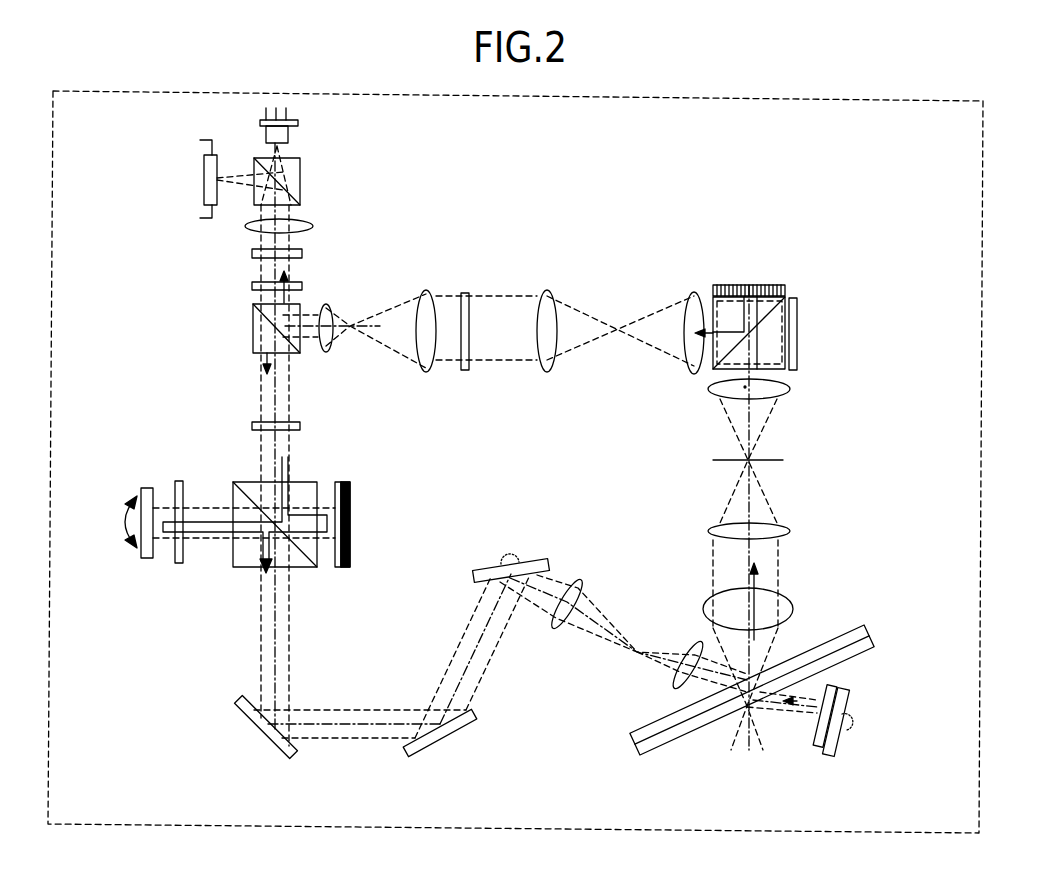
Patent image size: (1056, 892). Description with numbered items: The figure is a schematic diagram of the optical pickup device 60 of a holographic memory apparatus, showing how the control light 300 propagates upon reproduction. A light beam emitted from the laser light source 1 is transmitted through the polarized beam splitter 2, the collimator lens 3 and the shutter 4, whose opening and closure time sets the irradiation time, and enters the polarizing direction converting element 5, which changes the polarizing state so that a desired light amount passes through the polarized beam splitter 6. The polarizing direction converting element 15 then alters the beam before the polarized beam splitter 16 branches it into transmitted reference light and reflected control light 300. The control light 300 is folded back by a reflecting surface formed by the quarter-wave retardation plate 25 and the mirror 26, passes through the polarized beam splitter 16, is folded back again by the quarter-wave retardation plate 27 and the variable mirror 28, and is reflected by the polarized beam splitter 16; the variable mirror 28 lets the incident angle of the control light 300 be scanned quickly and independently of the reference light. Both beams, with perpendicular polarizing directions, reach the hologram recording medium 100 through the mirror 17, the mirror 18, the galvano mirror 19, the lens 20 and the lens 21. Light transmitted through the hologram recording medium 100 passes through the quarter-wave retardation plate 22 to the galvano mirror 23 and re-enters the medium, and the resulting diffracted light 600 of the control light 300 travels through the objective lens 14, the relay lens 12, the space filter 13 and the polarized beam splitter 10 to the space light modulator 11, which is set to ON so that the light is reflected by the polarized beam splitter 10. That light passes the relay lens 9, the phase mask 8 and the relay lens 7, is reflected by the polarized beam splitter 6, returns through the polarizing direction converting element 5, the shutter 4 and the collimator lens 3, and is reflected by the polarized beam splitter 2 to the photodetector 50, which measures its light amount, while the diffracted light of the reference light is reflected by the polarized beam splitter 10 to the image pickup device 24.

The laser light source 1 is at (291, 133).
The polarized beam splitter 2 is at (300, 181).
The collimator lens 3 is at (313, 226).
The shutter 4 is at (252, 253).
The polarizing direction converting element 5 is at (252, 286).
The polarized beam splitter 6 is at (253, 328).
The relay lens 7 is at (325, 283).
The phase mask 8 is at (465, 372).
The relay lens 9 is at (555, 283).
The polarized beam splitter 10 is at (713, 369).
The space light modulator 11 is at (757, 285).
The relay lens 12 is at (800, 398).
The space filter 13 is at (722, 459).
The objective lens 14 is at (793, 609).
The polarizing direction converting element 15 is at (252, 426).
The polarized beam splitter 16 is at (243, 567).
The mirror 17 is at (262, 737).
The mirror 18 is at (440, 745).
The galvano mirror 19 is at (487, 571).
The lens 20 is at (560, 625).
The lens 21 is at (690, 648).
The quarter-wave retardation plate 22 is at (818, 752).
The galvano mirror 23 is at (851, 705).
The image pickup device 24 is at (798, 334).
The quarter-wave retardation plate 25 is at (342, 568).
The mirror 26 is at (345, 481).
The quarter-wave retardation plate 27 is at (178, 564).
The variable mirror 28 is at (146, 559).
The photodetector 50 is at (204, 180).
The optical pickup device 60 is at (981, 466).
The hologram recording medium 100 is at (633, 748).
The control light 300 is at (206, 518).
The diffracted light 600 is at (500, 300).